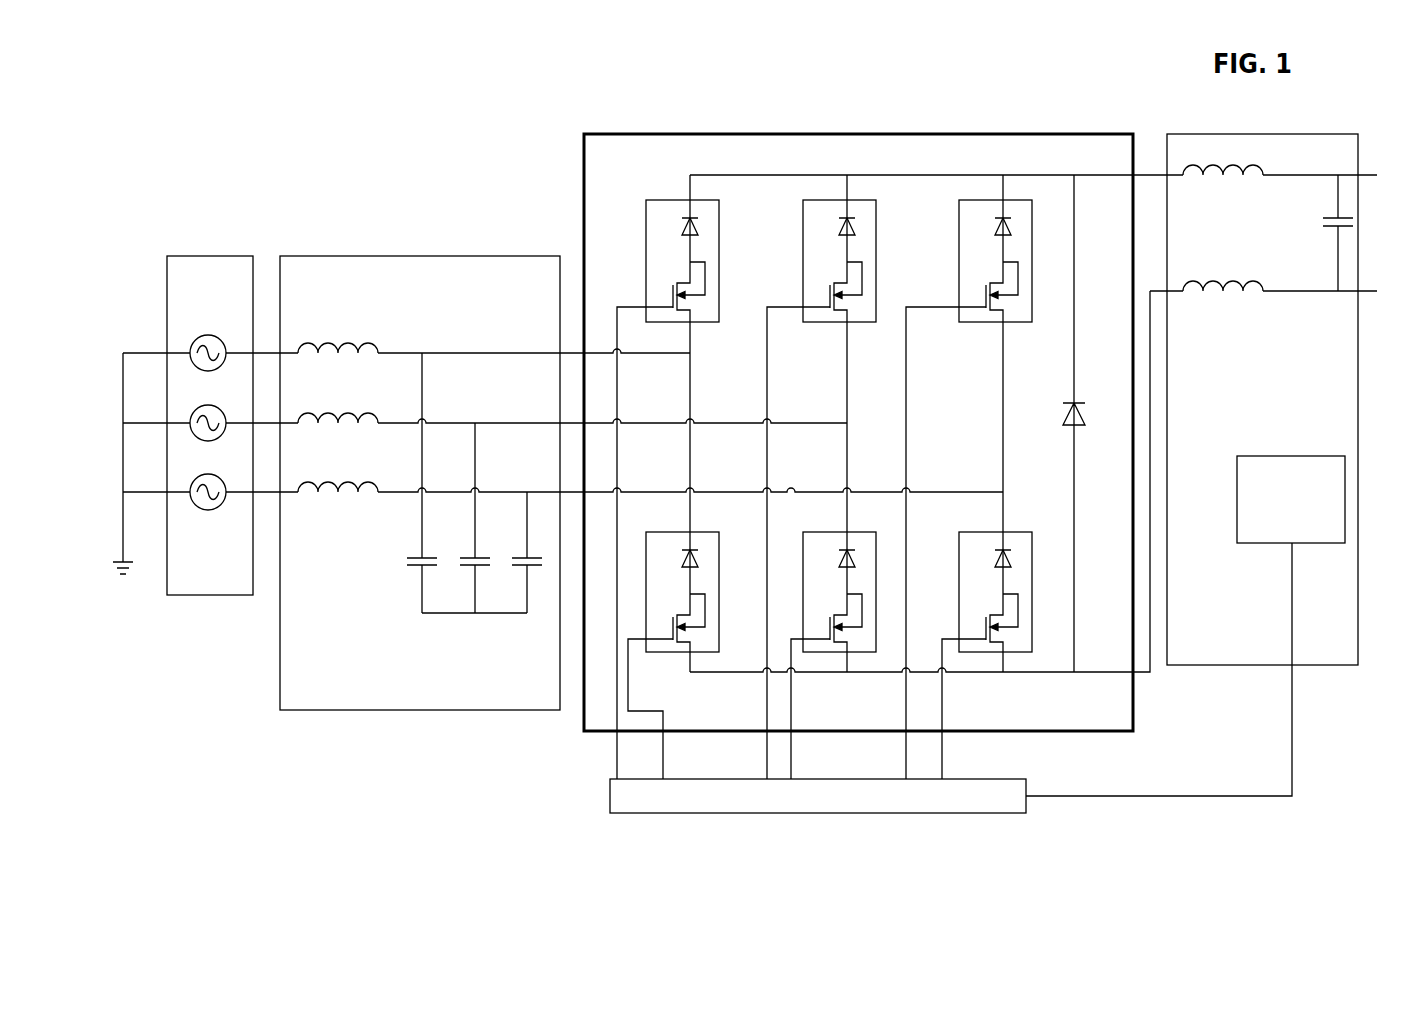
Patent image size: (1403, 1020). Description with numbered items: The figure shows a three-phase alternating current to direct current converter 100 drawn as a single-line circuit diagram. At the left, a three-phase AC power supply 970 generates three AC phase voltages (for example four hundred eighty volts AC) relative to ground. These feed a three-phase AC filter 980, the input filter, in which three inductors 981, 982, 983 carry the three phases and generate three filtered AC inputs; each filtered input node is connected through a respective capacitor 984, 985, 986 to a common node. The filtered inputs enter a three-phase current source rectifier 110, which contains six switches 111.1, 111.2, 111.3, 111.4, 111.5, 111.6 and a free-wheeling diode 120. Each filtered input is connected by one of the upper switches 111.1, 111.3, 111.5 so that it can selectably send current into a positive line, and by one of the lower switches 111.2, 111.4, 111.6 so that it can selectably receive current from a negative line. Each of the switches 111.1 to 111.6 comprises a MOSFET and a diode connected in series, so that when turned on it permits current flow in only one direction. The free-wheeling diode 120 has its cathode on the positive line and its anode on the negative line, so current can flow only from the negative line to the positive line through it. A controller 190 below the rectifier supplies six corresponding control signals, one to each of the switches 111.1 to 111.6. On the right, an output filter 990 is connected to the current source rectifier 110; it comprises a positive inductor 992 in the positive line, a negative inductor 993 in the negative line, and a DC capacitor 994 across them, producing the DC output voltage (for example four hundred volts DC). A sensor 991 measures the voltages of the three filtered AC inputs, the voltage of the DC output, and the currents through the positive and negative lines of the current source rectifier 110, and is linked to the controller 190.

The three-phase AC to DC converter 100 is at (1275, 110).
The three-phase current source rectifier 110 is at (1129, 723).
The switch 111.1 is at (646, 279).
The switch 111.2 is at (646, 610).
The switch 111.3 is at (803, 279).
The switch 111.4 is at (803, 610).
The switch 111.5 is at (960, 279).
The switch 111.6 is at (960, 610).
The free-wheeling diode 120 is at (1129, 499).
The controller 190 is at (1023, 806).
The three-phase AC power supply 970 is at (250, 589).
The three-phase AC filter 980 is at (554, 701).
The inductor 981 is at (375, 335).
The inductor 982 is at (375, 406).
The inductor 983 is at (375, 476).
The capacitor 984 is at (404, 561).
The capacitor 985 is at (489, 554).
The capacitor 986 is at (541, 610).
The output filter 990 is at (1355, 659).
The sensor 991 is at (1341, 539).
The positive inductor 992 is at (1237, 212).
The negative inductor 993 is at (1237, 336).
The DC capacitor 994 is at (1319, 262).